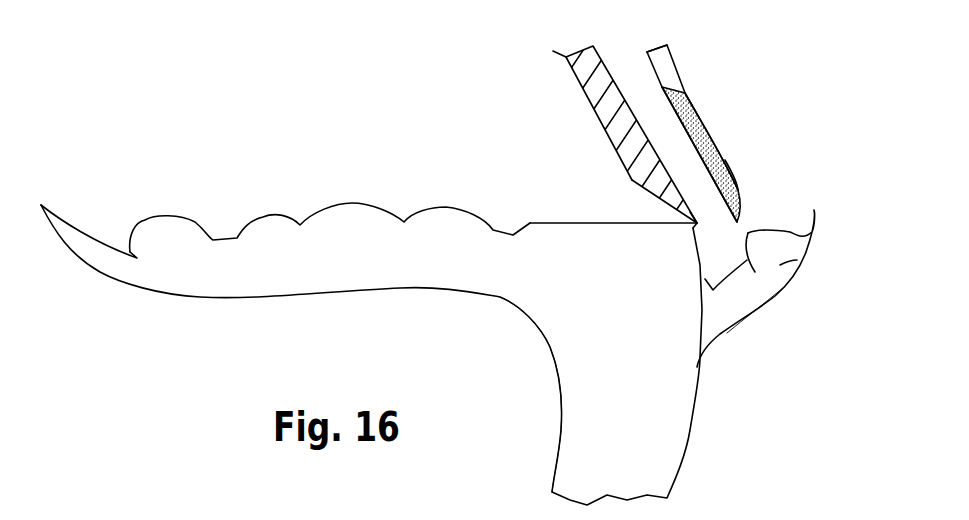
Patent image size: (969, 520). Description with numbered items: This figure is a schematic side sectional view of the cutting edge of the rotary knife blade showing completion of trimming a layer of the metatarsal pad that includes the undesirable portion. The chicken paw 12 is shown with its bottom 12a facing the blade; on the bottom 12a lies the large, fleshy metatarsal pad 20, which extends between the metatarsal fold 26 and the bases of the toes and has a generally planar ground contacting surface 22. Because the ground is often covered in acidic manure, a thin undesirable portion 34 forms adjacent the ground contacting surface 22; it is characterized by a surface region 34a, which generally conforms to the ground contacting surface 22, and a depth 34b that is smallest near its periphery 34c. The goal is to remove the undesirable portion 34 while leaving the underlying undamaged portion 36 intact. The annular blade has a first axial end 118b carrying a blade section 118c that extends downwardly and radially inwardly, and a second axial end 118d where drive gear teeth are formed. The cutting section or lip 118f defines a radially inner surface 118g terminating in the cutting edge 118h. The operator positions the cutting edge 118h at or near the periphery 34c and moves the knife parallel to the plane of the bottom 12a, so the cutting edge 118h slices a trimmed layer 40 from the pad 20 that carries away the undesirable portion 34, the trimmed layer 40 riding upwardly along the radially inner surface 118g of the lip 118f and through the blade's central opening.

The chicken paw 12 is at (418, 305).
The bottom of the chicken paw 12a is at (402, 197).
The metatarsal pad 20 is at (557, 217).
The ground contacting surface 22 is at (705, 136).
The metatarsal fold 26 is at (703, 249).
The undesirable portion 34 is at (692, 95).
The surface region 34a is at (708, 130).
The depth 34b is at (659, 50).
The periphery of the undesirable portion 34c is at (693, 137).
The undamaged portion 36 is at (553, 250).
The trimmed layer 40 is at (723, 142).
The first axial end 118b is at (633, 163).
The blade section 118c is at (603, 97).
The second axial end 118d is at (692, 193).
The cutting section or lip 118f is at (673, 193).
The radially inner surface 118g is at (620, 67).
The cutting edge 118h is at (691, 227).